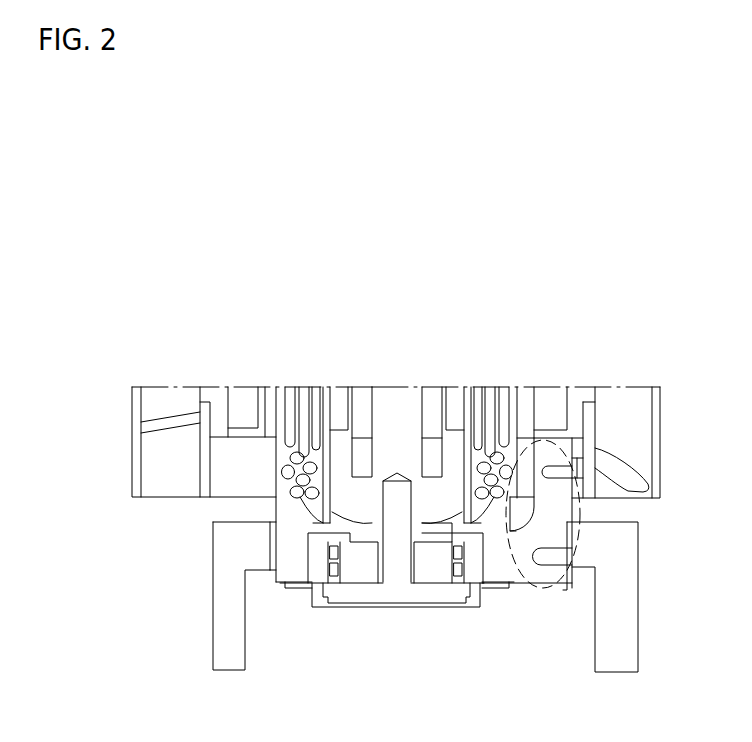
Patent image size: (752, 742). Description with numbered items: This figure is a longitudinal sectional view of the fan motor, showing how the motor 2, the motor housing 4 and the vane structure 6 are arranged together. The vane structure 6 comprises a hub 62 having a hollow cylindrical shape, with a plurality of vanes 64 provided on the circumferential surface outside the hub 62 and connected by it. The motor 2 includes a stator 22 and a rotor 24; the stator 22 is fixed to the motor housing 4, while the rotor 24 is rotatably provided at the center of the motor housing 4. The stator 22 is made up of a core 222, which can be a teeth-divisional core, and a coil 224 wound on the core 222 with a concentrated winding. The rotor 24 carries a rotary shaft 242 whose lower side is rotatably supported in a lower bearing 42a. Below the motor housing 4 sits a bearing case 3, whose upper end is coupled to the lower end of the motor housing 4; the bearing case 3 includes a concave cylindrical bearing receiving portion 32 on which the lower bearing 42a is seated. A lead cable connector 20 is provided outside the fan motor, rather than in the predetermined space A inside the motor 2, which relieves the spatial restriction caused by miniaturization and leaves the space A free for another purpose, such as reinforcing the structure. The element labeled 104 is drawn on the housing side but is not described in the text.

The motor 2 is at (327, 390).
The stator 22 is at (305, 380).
The rotor 24 is at (363, 380).
The rotary shaft 242 is at (405, 380).
The coil 224 is at (505, 380).
The core 222 is at (557, 382).
The motor housing 4 is at (587, 380).
The hook 104 is at (560, 433).
The vane structure 6 is at (158, 443).
The hub 62 is at (193, 480).
The vanes 64 is at (158, 452).
The lead cable connector 20 is at (200, 660).
The bearing receiving portion 32 is at (313, 576).
The lower bearing 42a is at (433, 580).
The bearing case 3 is at (523, 588).
The predetermined space A is at (593, 507).